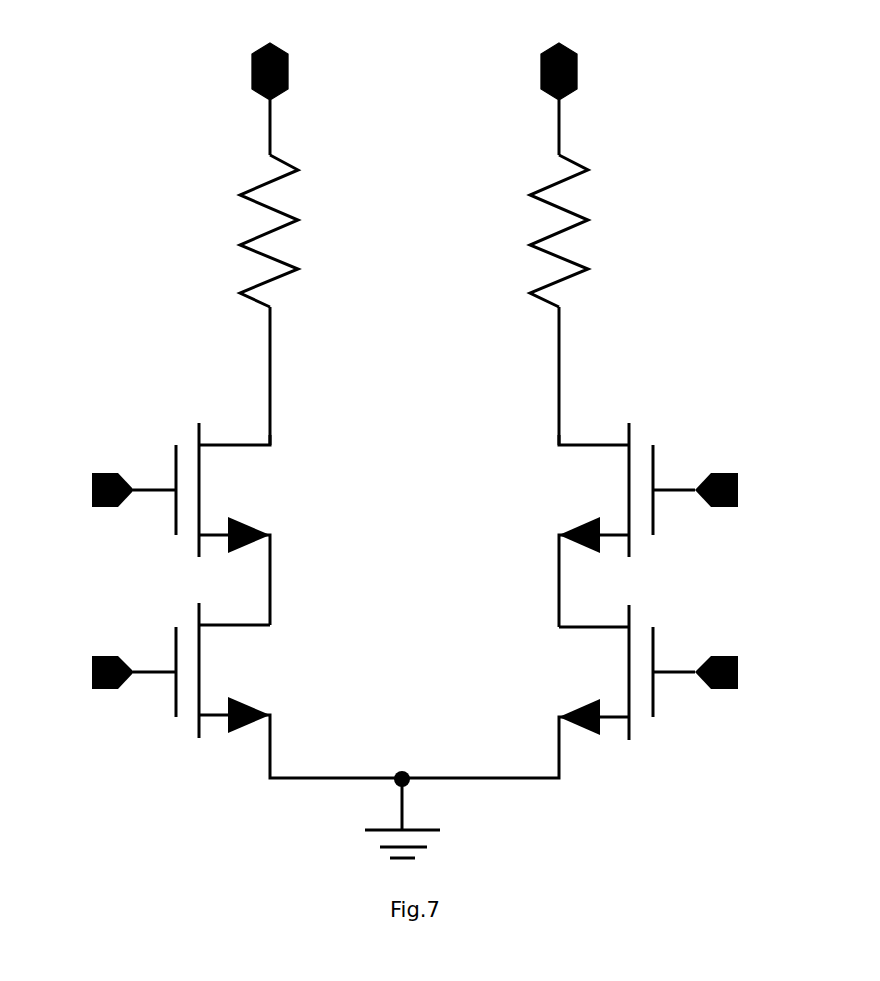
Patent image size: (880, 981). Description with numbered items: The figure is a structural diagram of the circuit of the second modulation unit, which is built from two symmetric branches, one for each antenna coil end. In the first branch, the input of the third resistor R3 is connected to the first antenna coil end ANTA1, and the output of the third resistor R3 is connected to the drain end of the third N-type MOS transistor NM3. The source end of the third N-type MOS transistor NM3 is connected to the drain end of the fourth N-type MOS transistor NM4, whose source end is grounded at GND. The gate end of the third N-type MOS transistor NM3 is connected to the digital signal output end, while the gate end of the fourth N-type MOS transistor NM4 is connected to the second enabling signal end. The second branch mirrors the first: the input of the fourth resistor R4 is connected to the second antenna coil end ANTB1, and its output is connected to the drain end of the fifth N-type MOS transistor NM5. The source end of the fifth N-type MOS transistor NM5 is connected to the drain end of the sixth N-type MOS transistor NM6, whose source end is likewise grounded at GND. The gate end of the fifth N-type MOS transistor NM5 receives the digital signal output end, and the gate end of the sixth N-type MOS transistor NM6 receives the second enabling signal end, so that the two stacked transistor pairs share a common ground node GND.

The first antenna coil end ANTA1 is at (274, 85).
The second antenna coil end ANTB1 is at (558, 85).
The third resistor R3 is at (287, 300).
The fourth resistor R4 is at (577, 300).
The third N-type MOS transistor NM3 is at (175, 524).
The fourth N-type MOS transistor NM4 is at (220, 690).
The fifth N-type MOS transistor NM5 is at (651, 525).
The sixth N-type MOS transistor NM6 is at (599, 691).
The ground GND is at (435, 823).